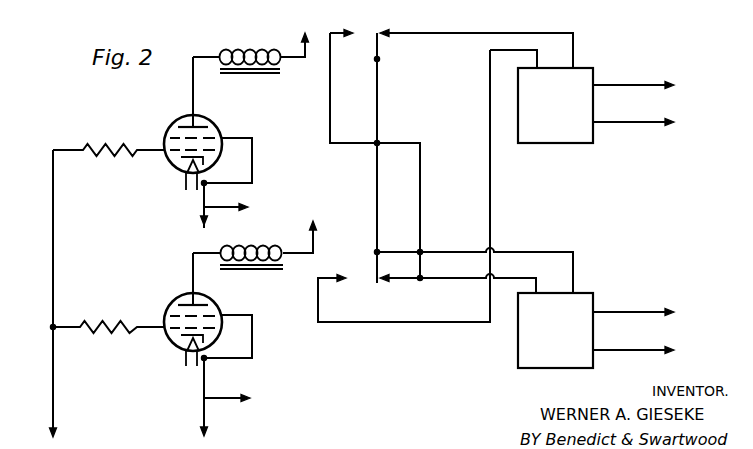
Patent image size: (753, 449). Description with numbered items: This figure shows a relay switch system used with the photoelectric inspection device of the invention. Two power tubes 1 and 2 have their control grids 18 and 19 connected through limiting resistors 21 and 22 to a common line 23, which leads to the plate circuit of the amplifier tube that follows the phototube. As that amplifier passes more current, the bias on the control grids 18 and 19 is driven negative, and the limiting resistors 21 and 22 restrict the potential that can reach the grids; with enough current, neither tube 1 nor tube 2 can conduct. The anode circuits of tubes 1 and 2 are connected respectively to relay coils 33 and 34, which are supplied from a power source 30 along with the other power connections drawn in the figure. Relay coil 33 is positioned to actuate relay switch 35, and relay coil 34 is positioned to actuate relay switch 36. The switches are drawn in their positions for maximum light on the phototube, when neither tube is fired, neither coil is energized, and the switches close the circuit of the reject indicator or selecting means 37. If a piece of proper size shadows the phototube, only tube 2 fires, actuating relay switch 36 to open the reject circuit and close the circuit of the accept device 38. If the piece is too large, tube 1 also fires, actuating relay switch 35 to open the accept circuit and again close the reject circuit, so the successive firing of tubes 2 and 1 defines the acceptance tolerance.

The power tube 1 is at (175, 125).
The power tube 2 is at (172, 306).
The control grid 18 is at (167, 157).
The control grid 19 is at (168, 334).
The limiting resistor 21 is at (104, 145).
The limiting resistor 22 is at (106, 323).
The line 23 is at (57, 414).
The power supply 30 is at (325, 210).
The relay coil 33 is at (262, 49).
The relay coil 34 is at (258, 266).
The relay switch 35 is at (382, 60).
The relay switch 36 is at (380, 251).
The reject indicator or selecting means 37 is at (605, 330).
The accept device 38 is at (605, 105).